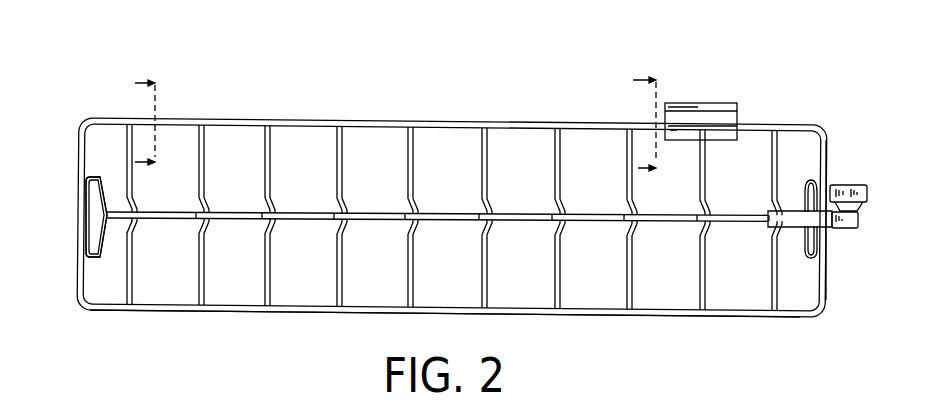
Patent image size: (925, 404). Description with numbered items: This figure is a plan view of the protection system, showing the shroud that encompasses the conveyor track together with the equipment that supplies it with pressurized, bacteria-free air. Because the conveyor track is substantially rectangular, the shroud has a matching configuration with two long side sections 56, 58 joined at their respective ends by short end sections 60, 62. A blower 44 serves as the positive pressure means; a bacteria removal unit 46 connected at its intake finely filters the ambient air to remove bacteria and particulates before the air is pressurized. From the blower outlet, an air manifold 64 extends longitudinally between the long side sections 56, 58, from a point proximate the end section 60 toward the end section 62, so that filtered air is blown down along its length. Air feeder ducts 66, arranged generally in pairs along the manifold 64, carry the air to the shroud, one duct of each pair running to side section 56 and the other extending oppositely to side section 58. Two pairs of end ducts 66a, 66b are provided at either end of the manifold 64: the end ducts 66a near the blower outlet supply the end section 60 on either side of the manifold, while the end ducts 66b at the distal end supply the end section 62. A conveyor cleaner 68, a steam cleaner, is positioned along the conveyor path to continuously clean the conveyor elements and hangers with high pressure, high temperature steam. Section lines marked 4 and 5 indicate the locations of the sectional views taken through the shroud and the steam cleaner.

The blower 44 is at (860, 222).
The bacteria removal unit 46 is at (867, 185).
The long side section of shroud 56 is at (388, 121).
The long side section of shroud 58 is at (397, 313).
The end section of shroud 60 is at (831, 256).
The end section of shroud 62 is at (74, 211).
The air manifold 64 is at (527, 207).
The air feeder ducts 66 is at (339, 148).
The end ducts 66a is at (797, 174).
The end ducts 66b is at (103, 174).
The conveyor cleaner 68 is at (715, 101).
The section line 4- 4 is at (158, 121).
The section line 5- 5 is at (659, 122).